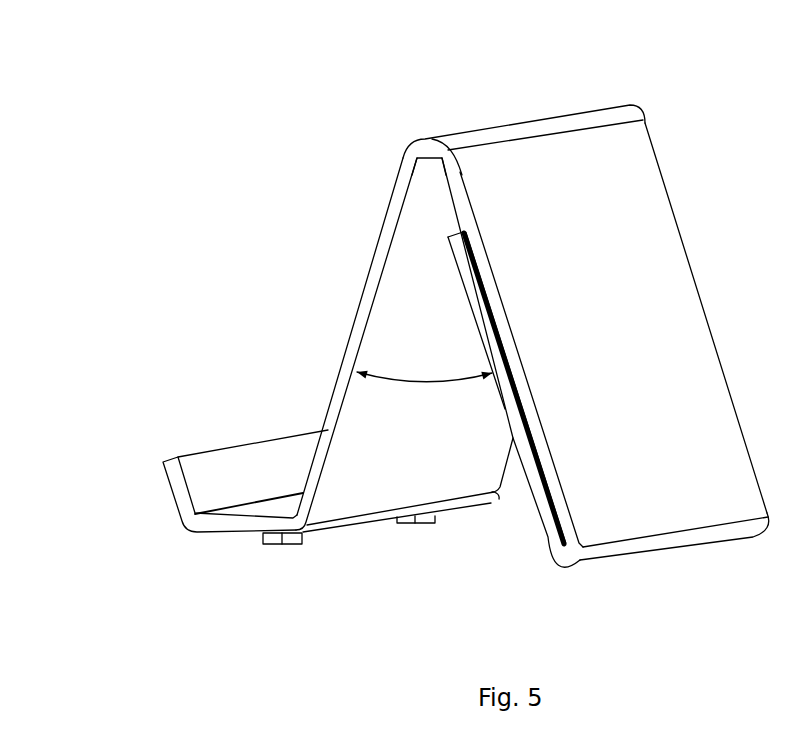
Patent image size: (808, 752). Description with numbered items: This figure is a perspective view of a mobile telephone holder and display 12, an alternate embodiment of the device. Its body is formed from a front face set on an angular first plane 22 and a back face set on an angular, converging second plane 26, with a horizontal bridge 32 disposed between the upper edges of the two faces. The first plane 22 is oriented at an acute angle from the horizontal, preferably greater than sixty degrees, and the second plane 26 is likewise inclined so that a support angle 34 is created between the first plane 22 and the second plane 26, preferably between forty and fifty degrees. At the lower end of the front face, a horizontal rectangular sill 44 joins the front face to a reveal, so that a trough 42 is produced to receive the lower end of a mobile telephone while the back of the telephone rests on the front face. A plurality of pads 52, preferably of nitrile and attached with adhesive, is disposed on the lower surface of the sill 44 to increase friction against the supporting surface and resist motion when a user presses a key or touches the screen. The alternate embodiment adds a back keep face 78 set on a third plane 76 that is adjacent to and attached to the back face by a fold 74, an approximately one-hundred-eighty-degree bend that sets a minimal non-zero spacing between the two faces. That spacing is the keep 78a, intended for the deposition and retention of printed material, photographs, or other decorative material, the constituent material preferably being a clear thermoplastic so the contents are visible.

The mobile telephone holder and display 12 is at (133, 147).
The first plane 22 is at (360, 302).
The second plane 26 is at (695, 273).
The horizontal bridge 32 is at (632, 107).
The support angle 34 is at (425, 382).
The trough 42 is at (273, 447).
The horizontal rectangular sill 44 is at (275, 499).
The pads 52 is at (267, 546).
The fold 74 is at (733, 538).
The third plane 76 is at (548, 523).
The back keep face 78 is at (453, 260).
The keep 78a is at (532, 452).